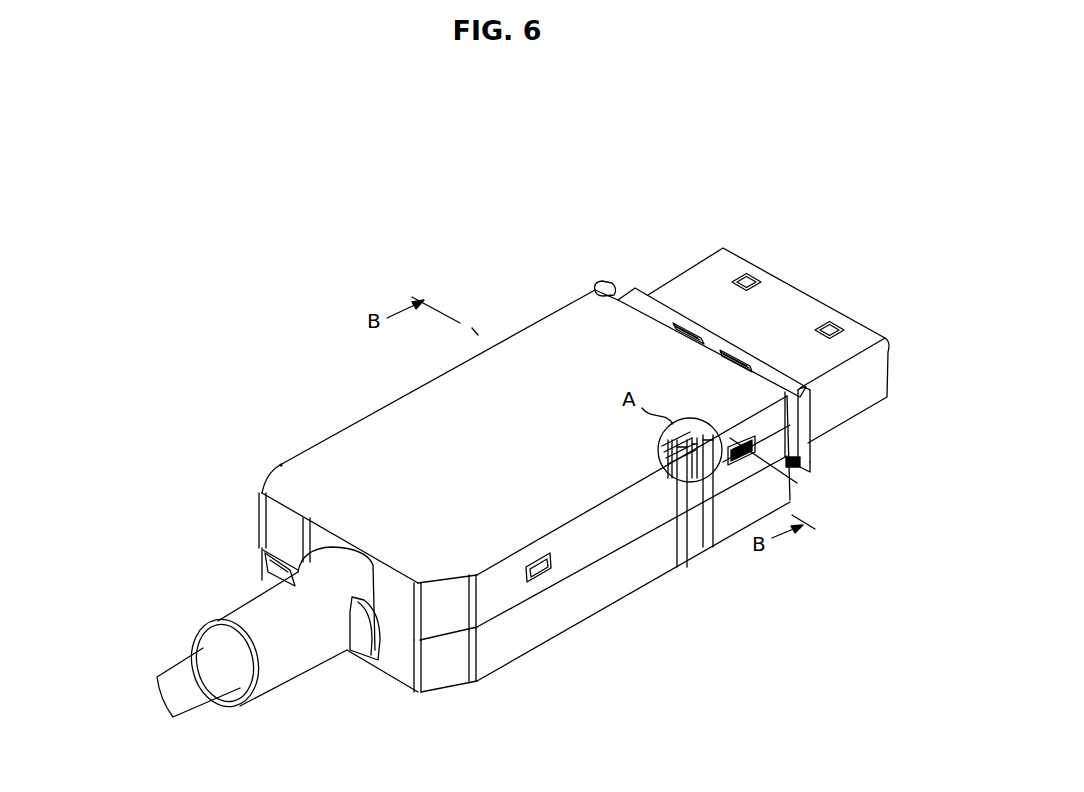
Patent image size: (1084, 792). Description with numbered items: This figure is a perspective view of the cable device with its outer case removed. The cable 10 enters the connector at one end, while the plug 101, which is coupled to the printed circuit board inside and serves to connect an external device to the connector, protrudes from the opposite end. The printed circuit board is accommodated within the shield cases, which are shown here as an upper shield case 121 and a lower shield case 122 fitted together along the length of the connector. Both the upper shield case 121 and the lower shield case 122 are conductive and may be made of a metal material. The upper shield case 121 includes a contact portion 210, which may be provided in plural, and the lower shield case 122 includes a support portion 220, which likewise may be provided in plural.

The cable 10 is at (170, 666).
The plug 101 is at (797, 306).
The upper shield case 121 is at (366, 420).
The lower shield case 122 is at (573, 607).
The contact portion 210 is at (791, 479).
The support portion 220 is at (688, 552).